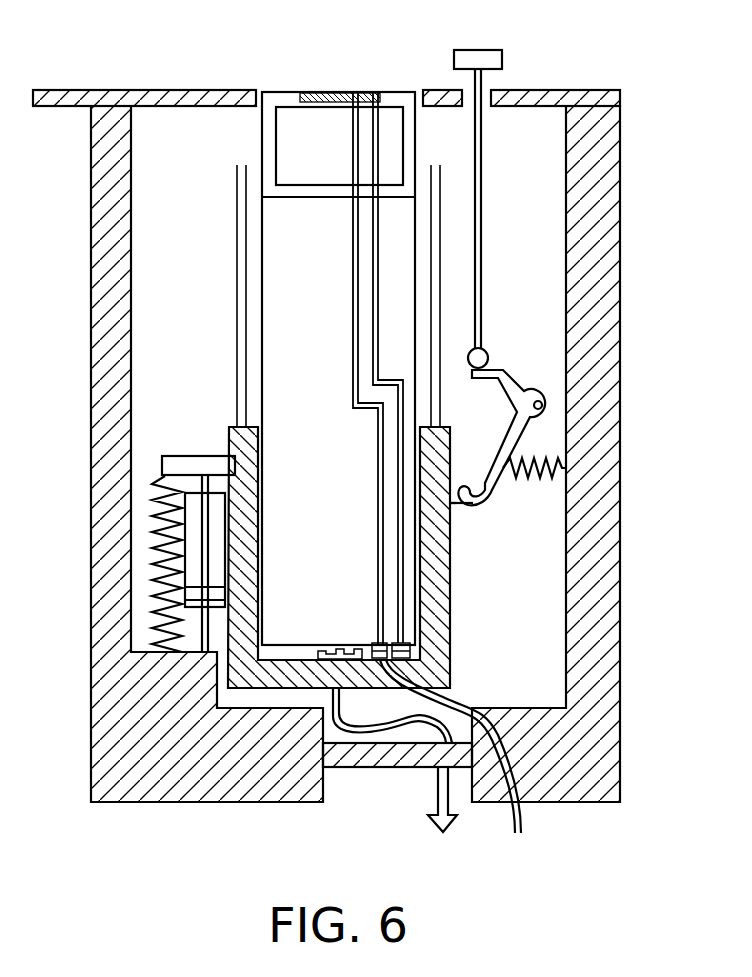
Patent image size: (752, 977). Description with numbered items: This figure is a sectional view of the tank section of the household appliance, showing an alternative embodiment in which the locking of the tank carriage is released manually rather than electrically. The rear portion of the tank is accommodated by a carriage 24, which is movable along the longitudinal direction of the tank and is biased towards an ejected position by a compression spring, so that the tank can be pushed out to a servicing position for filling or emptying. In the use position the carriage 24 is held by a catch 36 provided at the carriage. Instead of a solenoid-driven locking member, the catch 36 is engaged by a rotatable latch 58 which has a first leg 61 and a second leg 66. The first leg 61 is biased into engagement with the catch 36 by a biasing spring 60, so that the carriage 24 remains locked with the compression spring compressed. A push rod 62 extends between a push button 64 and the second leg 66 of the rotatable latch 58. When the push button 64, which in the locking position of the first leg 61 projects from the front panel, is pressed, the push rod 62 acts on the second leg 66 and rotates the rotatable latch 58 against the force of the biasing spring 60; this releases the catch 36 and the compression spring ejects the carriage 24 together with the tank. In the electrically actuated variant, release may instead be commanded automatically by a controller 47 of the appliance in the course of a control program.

The carriage 24 is at (435, 590).
The catch 36 is at (450, 533).
The controller 47 is at (468, 765).
The rotatable latch 58 is at (550, 393).
The biasing spring 60 is at (545, 478).
The first leg 61 is at (460, 513).
The push rod 62 is at (481, 255).
The push button 64 is at (502, 55).
The second leg 66 is at (512, 382).